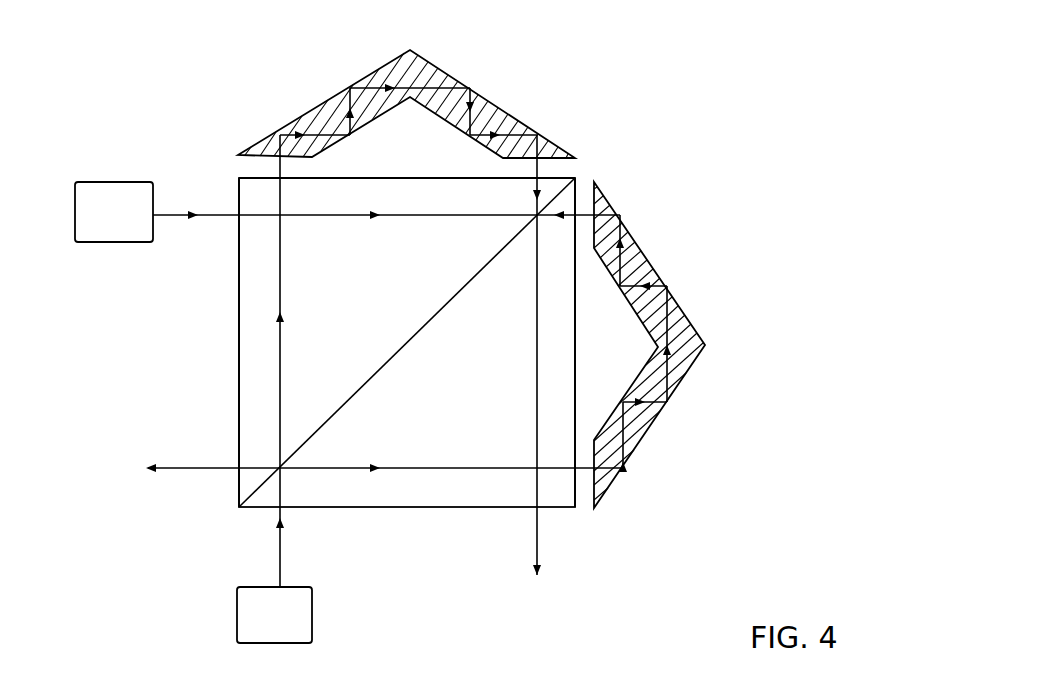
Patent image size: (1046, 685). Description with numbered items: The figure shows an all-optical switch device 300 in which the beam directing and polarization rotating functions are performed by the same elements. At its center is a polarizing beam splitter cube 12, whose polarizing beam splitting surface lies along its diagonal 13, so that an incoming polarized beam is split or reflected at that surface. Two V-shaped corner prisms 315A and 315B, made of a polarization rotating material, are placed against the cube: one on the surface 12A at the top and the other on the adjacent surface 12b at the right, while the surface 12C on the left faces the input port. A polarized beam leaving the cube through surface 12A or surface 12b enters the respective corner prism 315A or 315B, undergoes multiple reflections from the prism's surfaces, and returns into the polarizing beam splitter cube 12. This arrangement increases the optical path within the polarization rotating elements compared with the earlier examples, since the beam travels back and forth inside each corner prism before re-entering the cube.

The all-optical switch device 300 is at (249, 78).
The V-shaped corner prism 315A is at (493, 108).
The V-shaped corner prism 315B is at (653, 272).
The polarizing beam splitter cube 12 is at (262, 296).
The surface of the beam splitter cube 12A is at (374, 178).
The surface of the beam splitter cube 12b is at (577, 338).
The left face of beam splitter 12C is at (238, 386).
The diagonal 13 is at (325, 425).